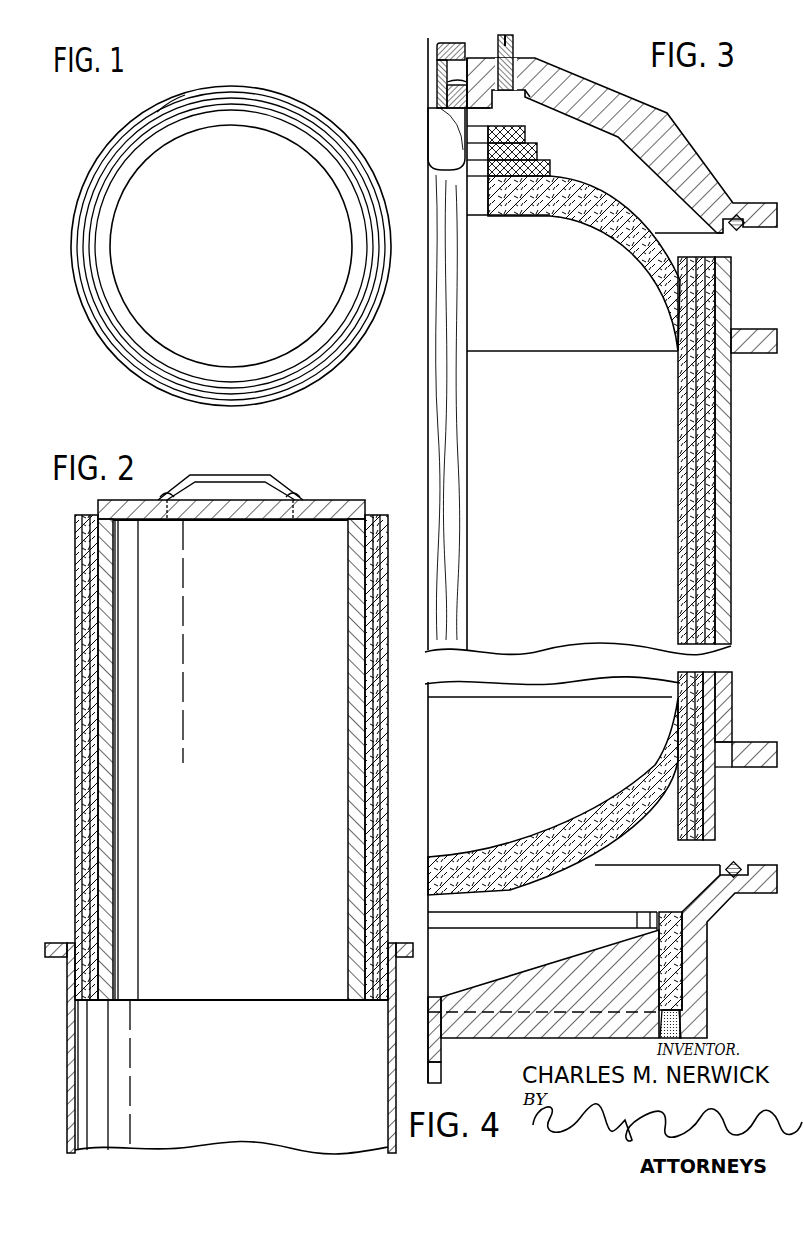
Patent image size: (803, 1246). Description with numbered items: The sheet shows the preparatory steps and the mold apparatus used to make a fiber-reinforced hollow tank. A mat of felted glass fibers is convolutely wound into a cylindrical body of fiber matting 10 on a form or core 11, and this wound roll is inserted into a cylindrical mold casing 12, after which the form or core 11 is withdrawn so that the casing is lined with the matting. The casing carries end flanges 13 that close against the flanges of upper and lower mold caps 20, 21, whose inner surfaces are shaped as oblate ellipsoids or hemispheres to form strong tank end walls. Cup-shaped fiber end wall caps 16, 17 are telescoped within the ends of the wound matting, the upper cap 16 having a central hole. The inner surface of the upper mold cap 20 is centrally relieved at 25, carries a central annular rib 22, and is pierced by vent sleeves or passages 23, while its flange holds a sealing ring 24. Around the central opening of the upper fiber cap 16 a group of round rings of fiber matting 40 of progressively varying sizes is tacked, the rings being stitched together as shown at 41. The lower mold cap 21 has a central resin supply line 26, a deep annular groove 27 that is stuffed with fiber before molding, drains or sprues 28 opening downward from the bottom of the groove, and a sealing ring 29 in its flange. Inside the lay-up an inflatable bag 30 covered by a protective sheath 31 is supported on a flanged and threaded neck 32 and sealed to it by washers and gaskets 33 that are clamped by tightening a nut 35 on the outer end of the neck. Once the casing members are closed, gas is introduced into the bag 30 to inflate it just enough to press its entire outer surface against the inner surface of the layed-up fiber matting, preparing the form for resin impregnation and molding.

In FIG. 1, the convolutely wound fiber matting 10 is at (123, 352).
In FIG. 2, the convolutely wound fiber matting 10 is at (76, 680).
In FIG. 3, the convolutely wound fiber matting 10 is at (713, 567).
In FIG. 4, the convolutely wound fiber matting 10 is at (715, 815).
In FIG. 1, the form or core 11 is at (155, 349).
In FIG. 2, the form or core 11 is at (105, 583).
In FIG. 2, the cylindrical mold casing 12 is at (67, 1053).
In FIG. 3, the cylindrical mold casing 12 is at (730, 458).
In FIG. 4, the cylindrical mold casing 12 is at (731, 683).
In FIG. 2, the end flanges 13 is at (59, 943).
In FIG. 3, the end flanges 13 is at (769, 329).
In FIG. 4, the end flanges 13 is at (770, 744).
In FIG. 3, the upper end wall cap 16 is at (577, 213).
In FIG. 4, the lower end wall cap 17 is at (580, 831).
In FIG. 3, the upper mold cap 20 is at (577, 86).
In FIG. 4, the lower mold cap 21 is at (573, 1028).
In FIG. 3, the central annular rib 22 is at (488, 109).
In FIG. 3, the vent sleeves or passages 23 is at (514, 45).
In FIG. 3, the sealing ring 24 is at (737, 230).
In FIG. 3, the central relief 25 is at (553, 76).
In FIG. 4, the central resin supply line 26 is at (442, 1063).
In FIG. 4, the deep annular groove 27 is at (677, 968).
In FIG. 4, the drains or sprues 28 is at (682, 1028).
In FIG. 4, the sealing ring 29 is at (740, 867).
In FIG. 3, the bag 30 is at (437, 166).
In FIG. 3, the protective sheath 31 is at (466, 243).
In FIG. 3, the flanged and threaded neck 32 is at (437, 47).
In FIG. 3, the washers and gaskets 33 is at (447, 92).
In FIG. 3, the nut 35 is at (437, 60).
In FIG. 3, the round rings of fiber matting 40 is at (538, 150).
In FIG. 3, the stitching of rings 41 is at (524, 134).